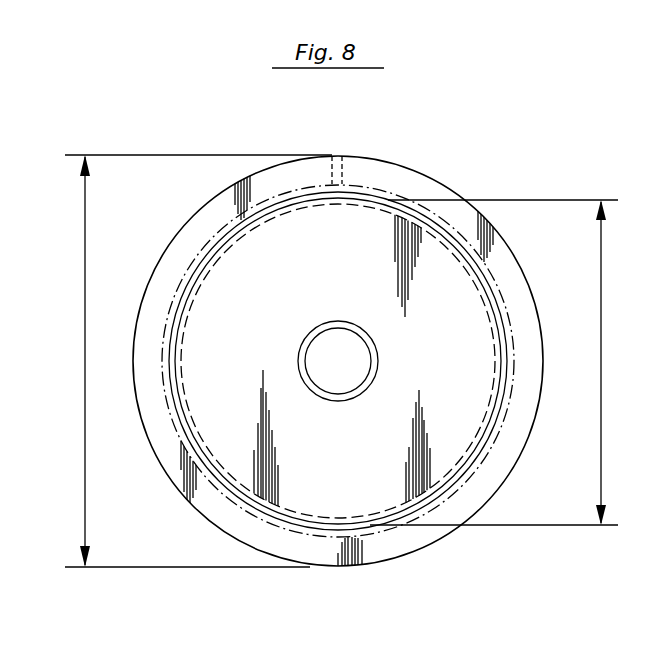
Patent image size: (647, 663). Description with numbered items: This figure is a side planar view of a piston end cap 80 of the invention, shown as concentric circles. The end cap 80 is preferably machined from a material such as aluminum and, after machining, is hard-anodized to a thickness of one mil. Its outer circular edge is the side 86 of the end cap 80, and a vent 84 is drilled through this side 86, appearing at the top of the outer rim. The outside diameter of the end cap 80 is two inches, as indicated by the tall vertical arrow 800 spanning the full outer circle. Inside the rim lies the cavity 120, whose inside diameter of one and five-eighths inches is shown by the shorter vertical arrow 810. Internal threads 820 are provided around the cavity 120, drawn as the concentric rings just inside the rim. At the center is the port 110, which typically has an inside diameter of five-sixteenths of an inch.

The end cap 80 is at (415, 560).
The vent 84 is at (348, 163).
The side 86 is at (443, 178).
The port 110 is at (352, 343).
The cavity 120 is at (333, 268).
The arrow 800 is at (84, 371).
The arrow 810 is at (602, 372).
The internal threads 820 is at (216, 258).